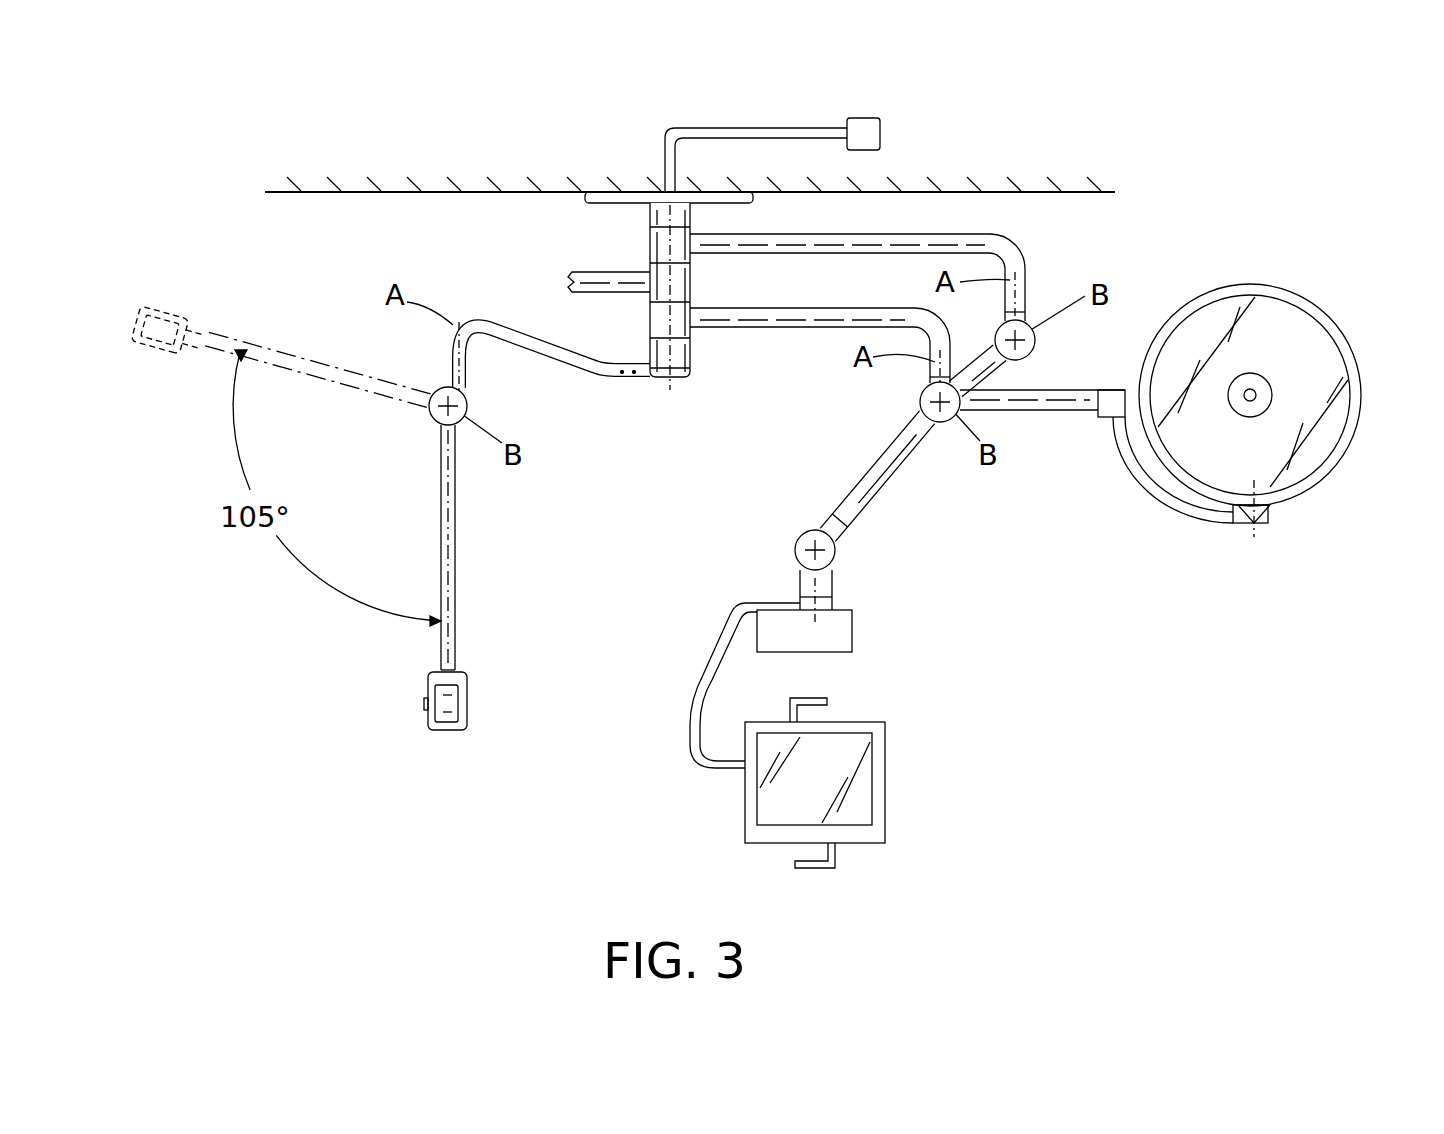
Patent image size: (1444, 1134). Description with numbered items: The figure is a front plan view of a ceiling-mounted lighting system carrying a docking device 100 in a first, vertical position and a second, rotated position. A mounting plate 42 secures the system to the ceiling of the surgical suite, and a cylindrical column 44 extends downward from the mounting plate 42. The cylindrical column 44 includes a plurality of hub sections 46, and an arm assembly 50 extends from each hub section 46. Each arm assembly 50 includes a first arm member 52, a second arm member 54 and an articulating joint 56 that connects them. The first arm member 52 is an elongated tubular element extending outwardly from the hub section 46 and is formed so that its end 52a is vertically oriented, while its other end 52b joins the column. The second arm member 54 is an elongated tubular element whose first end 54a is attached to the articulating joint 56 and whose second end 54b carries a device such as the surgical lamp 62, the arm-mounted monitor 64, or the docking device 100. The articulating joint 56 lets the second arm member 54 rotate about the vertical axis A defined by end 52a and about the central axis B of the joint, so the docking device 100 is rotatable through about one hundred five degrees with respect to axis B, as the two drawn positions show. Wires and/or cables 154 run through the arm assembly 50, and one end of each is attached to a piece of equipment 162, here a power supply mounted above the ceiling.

The mounting plate 42 is at (605, 191).
The cylindrical column 44 is at (640, 213).
The hub sections 46 is at (683, 283).
The arm assembly 50 is at (515, 308).
The first arm member 52 is at (914, 226).
The end of first arm member 52a is at (1025, 297).
The first arm proximal end 52b is at (621, 380).
The second arm member 54 is at (466, 540).
The first end of second arm member 54a is at (440, 468).
The second end of second arm member 54b is at (457, 657).
The articulating joint 56 is at (428, 416).
The surgical lamp 62 is at (1345, 335).
The arm-mounted monitor 64 is at (886, 772).
The docking device 100 is at (145, 360).
The wires and/or cables 154 is at (710, 130).
The equipment 162 is at (880, 136).